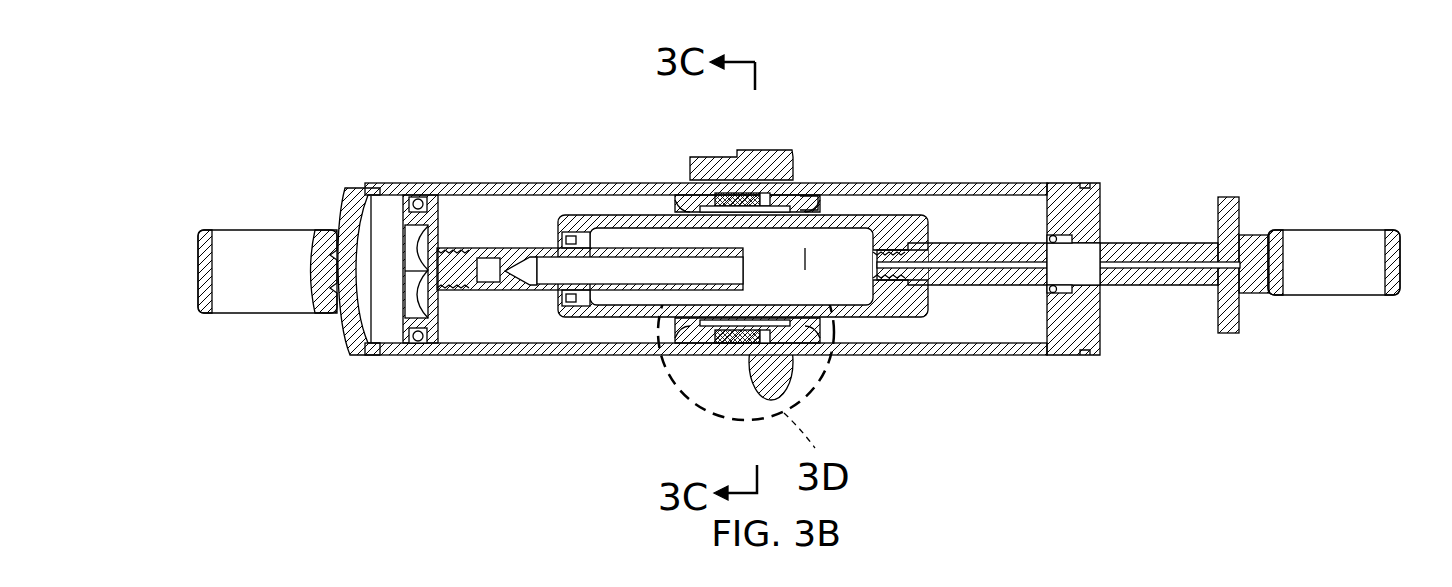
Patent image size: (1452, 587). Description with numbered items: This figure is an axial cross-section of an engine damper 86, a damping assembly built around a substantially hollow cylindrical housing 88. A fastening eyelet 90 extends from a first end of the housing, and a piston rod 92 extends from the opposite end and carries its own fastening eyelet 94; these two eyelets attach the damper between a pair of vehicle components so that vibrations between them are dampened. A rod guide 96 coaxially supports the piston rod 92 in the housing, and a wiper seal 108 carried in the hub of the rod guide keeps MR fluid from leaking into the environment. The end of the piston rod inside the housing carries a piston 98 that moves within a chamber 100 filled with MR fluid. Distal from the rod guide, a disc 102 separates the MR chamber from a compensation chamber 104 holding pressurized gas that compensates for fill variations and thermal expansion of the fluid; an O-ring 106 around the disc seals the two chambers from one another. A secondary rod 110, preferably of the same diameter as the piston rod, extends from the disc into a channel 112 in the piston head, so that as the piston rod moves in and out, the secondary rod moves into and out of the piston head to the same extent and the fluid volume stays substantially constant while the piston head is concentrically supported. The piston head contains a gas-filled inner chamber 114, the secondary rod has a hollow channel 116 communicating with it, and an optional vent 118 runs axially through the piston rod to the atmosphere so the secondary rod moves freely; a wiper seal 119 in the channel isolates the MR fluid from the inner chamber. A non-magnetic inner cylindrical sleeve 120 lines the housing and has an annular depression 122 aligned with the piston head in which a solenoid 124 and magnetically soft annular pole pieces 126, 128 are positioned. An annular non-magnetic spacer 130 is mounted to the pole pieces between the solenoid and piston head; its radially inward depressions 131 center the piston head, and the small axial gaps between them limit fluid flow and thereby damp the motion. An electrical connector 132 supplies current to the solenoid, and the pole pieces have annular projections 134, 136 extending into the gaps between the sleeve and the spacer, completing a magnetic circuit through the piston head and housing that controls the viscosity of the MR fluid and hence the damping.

The engine damper 86 is at (913, 80).
The cylindrical housing 88 is at (472, 185).
The fastening eyelet 90 is at (200, 262).
The piston rod 92 is at (1150, 243).
The fastening eyelet 94 is at (1390, 232).
The rod guide 96 is at (1100, 190).
The piston 98 is at (920, 315).
The chamber 100 is at (1005, 226).
The disc 102 is at (390, 186).
The compensation chamber 104 is at (390, 343).
The O-ring 106 is at (416, 197).
The wiper seal 108 is at (1090, 298).
The secondary rod 110 is at (506, 290).
The channel 112 is at (565, 238).
The inner chamber 114 is at (822, 272).
The hollow channel 116 is at (592, 279).
The vent 118 is at (1003, 268).
The wiper seal 119 is at (537, 297).
The inner cylindrical sleeve 120 is at (558, 197).
The annular depression 122 is at (803, 204).
The solenoid 124 is at (745, 194).
The annular pole piece 126 is at (678, 194).
The annular pole piece 128 is at (800, 194).
The non-magnetic spacer 130 is at (720, 345).
The radially inwardly extending depressions 131 is at (752, 230).
The electrical connector 132 is at (710, 157).
The annular projection 134 is at (687, 305).
The annular projection 136 is at (800, 345).